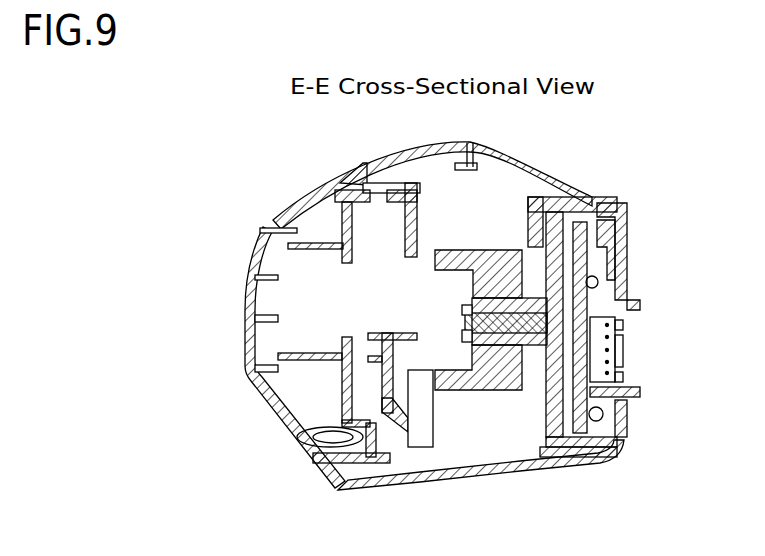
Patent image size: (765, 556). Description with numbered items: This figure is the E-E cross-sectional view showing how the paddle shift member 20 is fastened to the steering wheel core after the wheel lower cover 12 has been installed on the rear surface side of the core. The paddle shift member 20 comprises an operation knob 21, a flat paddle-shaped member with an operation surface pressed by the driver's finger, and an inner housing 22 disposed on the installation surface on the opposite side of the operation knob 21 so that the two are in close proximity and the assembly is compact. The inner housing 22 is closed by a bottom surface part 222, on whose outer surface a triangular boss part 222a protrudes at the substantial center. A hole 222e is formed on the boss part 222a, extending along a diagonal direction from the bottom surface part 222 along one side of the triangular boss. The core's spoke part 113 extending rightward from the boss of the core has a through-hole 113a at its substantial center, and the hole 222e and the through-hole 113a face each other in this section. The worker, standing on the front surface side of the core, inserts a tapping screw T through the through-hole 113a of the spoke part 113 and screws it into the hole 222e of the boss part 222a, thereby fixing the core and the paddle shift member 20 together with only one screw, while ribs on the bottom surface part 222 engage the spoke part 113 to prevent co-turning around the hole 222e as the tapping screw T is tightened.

The wheel lower cover 12 is at (423, 478).
The paddle shift member 20 is at (628, 196).
The operation knob 21 is at (627, 264).
The inner housing 22 is at (547, 432).
The spoke part 113 is at (450, 250).
The through-hole 113a is at (467, 322).
The bottom surface part 222 is at (547, 405).
The boss part 222a is at (527, 293).
The hole 222e is at (485, 383).
The tapping screw T is at (462, 337).